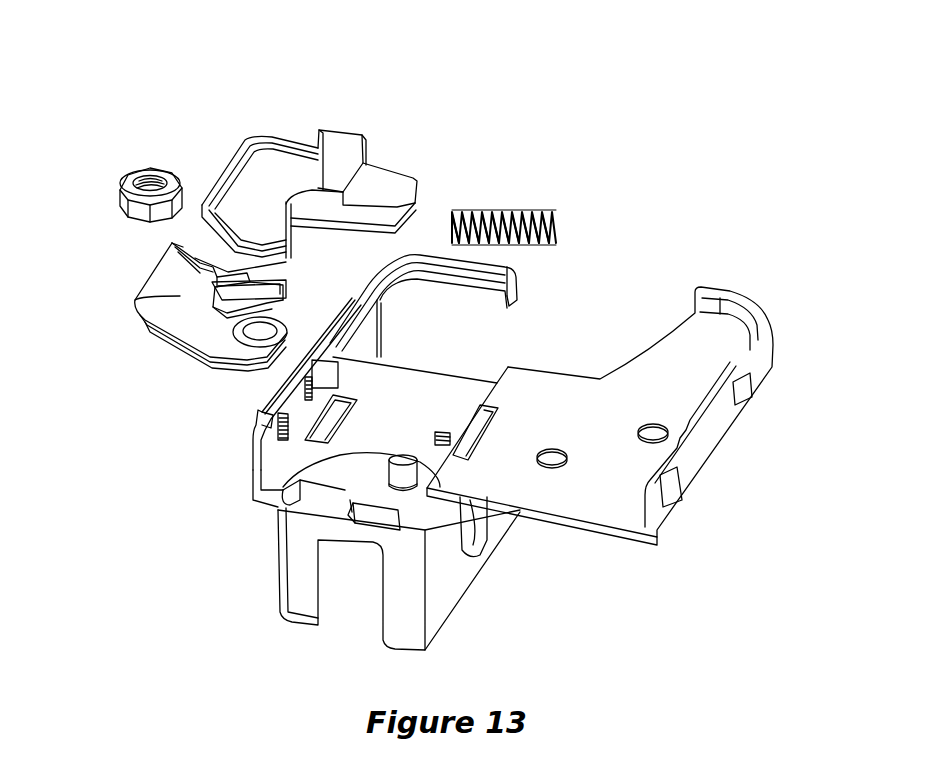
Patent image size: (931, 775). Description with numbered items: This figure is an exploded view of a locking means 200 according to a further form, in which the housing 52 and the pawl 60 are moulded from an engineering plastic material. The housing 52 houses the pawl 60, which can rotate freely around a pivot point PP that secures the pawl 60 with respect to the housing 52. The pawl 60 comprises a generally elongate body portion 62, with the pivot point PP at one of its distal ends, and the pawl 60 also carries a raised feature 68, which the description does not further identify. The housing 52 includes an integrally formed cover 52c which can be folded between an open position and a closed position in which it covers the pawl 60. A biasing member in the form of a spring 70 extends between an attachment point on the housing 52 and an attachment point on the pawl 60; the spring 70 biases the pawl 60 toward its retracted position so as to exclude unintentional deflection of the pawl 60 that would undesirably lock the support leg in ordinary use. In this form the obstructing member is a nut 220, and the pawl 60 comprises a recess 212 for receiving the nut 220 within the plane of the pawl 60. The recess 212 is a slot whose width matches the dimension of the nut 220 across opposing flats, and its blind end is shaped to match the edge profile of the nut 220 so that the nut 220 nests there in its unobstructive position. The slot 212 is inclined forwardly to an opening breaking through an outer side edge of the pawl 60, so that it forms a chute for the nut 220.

The locking means 200 is at (660, 190).
The nut 220 is at (143, 170).
The pawl 60 is at (268, 130).
The block 68 is at (390, 184).
The body portion 62 is at (180, 302).
The recess 212 is at (186, 235).
The spring 70 is at (503, 213).
The housing 52 is at (297, 592).
The cover 52c is at (638, 398).
The pivot point PP is at (283, 487).